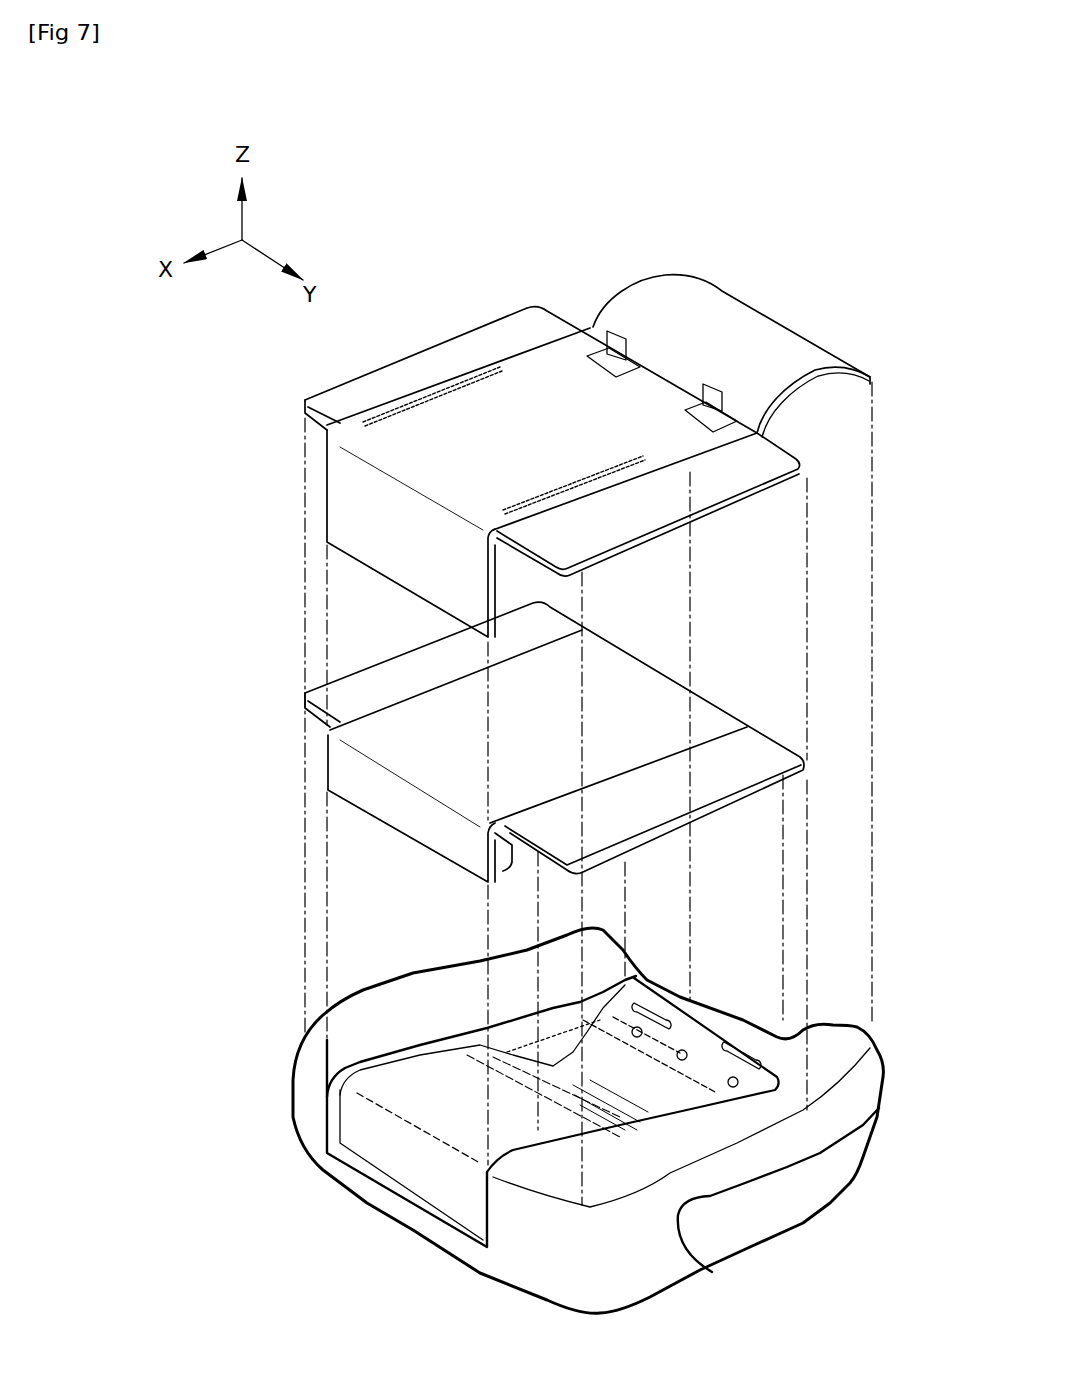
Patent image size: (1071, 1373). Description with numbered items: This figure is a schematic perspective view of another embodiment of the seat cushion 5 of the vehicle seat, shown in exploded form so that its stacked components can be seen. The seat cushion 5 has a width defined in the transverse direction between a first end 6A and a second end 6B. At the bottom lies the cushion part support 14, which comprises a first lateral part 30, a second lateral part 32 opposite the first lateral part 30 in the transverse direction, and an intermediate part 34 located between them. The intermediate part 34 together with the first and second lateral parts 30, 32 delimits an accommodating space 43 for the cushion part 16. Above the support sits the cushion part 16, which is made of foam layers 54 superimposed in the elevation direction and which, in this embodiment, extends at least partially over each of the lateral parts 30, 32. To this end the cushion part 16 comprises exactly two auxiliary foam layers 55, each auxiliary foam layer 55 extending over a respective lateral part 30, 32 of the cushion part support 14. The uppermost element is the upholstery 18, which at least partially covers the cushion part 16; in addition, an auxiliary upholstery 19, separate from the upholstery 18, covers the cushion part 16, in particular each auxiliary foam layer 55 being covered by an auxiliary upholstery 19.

The seat cushion 5 is at (822, 626).
The first end 6A is at (360, 990).
The second end 6B is at (808, 1157).
The cushion part support 14 is at (652, 1013).
The cushion part 16 is at (554, 723).
The upholstery 18 is at (587, 424).
The auxiliary upholstery 19 is at (523, 327).
The first lateral part 30 is at (598, 1092).
The second lateral part 32 is at (687, 1150).
The intermediate part 34 is at (427, 1118).
The accommodating space 43 is at (580, 1097).
The foam layers 54 is at (605, 707).
The auxiliary foam layers 55 is at (370, 690).